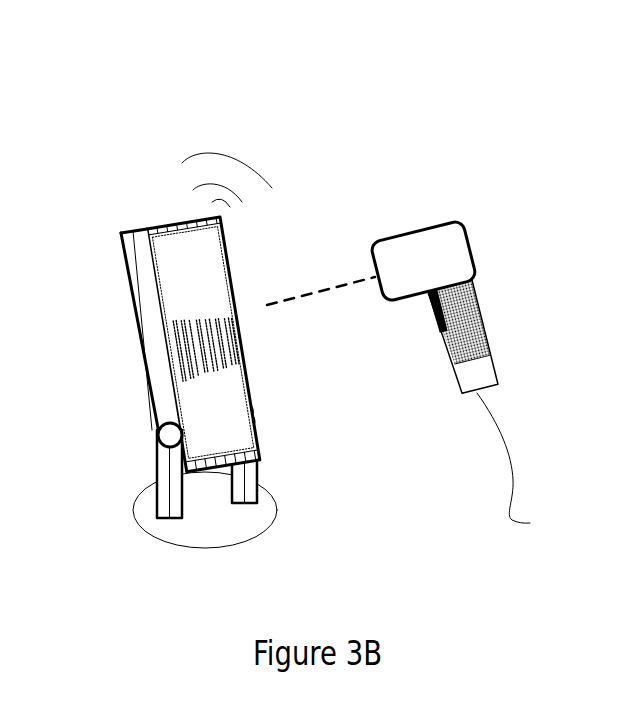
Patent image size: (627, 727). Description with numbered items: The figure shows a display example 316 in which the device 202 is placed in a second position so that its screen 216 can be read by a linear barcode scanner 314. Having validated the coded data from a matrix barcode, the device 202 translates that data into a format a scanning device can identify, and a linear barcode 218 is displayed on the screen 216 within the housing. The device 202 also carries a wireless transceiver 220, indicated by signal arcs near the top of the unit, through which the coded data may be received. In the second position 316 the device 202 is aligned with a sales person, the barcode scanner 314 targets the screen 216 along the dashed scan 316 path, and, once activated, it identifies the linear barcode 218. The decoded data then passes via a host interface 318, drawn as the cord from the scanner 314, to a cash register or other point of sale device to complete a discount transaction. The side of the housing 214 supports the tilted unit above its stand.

The device 202 is at (179, 337).
The housing side panel 214 is at (115, 265).
The screen 216 is at (177, 300).
The linear barcode 218 is at (212, 379).
The wireless transceiver 220 is at (226, 220).
The linear barcode scanner 314 is at (476, 248).
The display example (second position) 316 is at (350, 285).
The host interface 318 is at (513, 478).